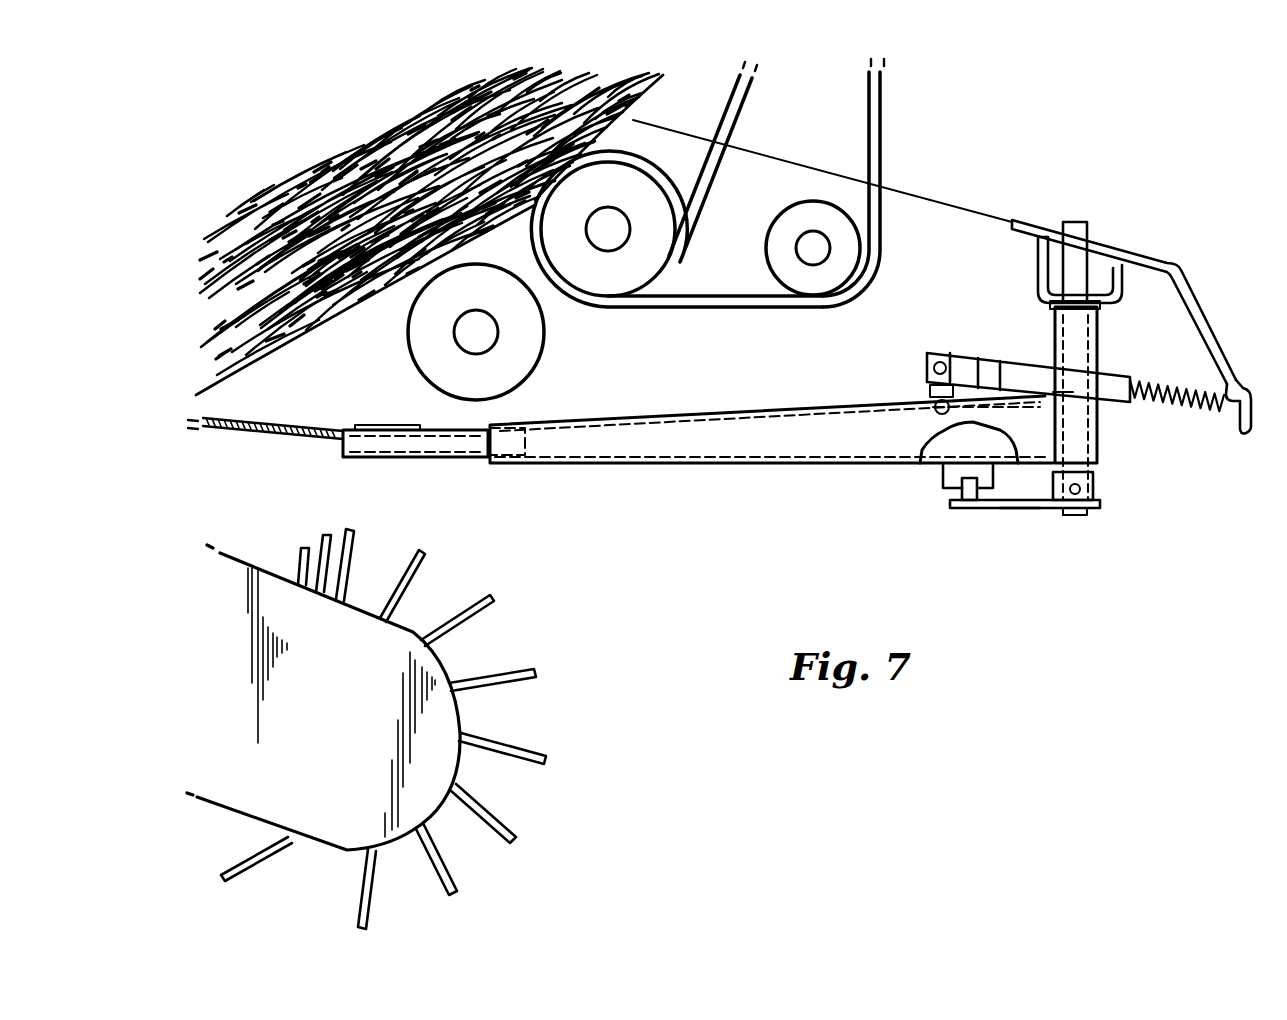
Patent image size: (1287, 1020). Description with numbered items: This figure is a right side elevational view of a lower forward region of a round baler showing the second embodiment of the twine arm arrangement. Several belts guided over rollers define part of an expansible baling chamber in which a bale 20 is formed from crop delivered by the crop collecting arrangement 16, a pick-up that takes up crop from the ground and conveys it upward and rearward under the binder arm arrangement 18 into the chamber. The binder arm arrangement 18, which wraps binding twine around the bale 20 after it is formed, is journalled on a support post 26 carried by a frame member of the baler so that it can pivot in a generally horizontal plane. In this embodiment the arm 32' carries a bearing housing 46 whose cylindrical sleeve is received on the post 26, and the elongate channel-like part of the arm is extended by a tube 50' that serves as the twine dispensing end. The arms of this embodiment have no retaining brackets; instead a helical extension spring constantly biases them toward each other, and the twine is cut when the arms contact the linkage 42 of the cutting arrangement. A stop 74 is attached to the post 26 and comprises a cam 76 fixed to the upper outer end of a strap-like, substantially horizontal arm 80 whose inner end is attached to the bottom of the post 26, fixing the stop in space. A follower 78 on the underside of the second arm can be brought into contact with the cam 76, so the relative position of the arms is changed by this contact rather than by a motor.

The crop collecting arrangement 16 is at (332, 719).
The binder arm arrangement 18 is at (658, 477).
The bale 20 is at (313, 352).
The support post 26 is at (1078, 512).
The arm 32' is at (786, 402).
The linkage 42 is at (1112, 366).
The bearing housing 46 is at (1098, 428).
The tube 50' is at (338, 457).
The stop 74 is at (967, 510).
The cam 76 is at (948, 498).
The follower 78 is at (940, 472).
The arm 80 is at (1018, 511).